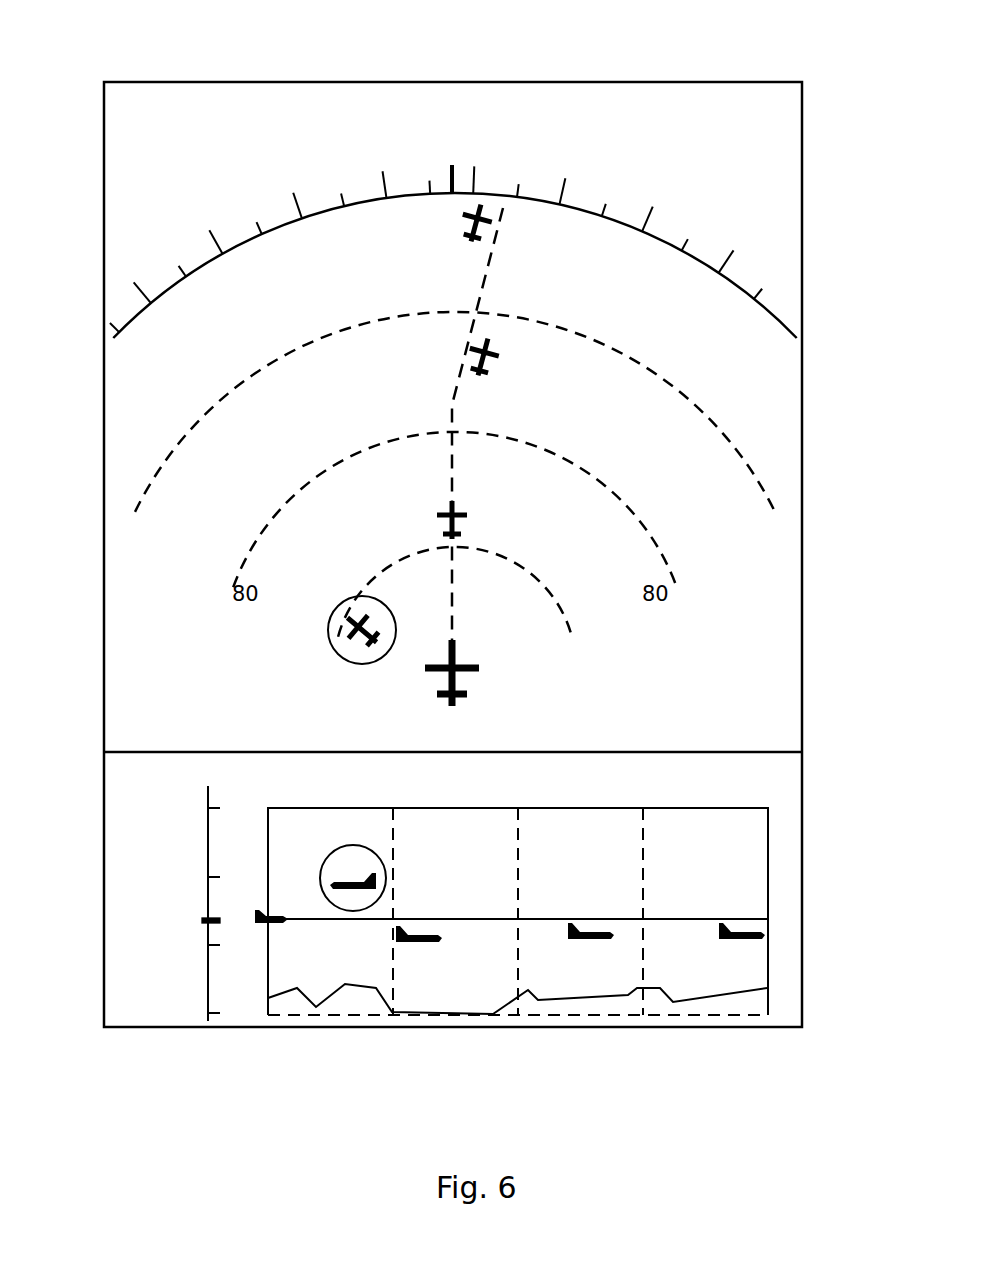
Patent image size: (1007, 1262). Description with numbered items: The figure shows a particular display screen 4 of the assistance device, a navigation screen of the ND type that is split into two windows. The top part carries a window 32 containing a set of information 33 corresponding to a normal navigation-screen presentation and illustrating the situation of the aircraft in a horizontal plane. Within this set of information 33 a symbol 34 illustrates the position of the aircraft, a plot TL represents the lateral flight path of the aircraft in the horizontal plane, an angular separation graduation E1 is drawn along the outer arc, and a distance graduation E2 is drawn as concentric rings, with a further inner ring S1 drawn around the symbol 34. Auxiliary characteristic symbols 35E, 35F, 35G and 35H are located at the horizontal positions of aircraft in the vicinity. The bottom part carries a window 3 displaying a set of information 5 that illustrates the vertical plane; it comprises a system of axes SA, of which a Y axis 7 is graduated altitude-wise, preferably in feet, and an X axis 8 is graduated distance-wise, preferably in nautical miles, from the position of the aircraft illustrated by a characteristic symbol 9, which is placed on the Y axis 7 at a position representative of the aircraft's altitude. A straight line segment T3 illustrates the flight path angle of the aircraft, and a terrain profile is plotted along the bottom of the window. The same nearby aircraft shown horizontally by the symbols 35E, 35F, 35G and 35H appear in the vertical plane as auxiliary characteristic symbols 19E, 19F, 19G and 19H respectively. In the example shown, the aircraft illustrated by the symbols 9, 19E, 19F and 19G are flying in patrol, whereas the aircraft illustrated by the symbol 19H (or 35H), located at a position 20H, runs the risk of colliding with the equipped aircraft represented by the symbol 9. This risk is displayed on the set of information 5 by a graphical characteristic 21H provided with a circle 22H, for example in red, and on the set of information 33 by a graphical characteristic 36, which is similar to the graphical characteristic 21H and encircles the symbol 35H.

The set of information 33 is at (700, 108).
The window 32 is at (158, 668).
The angular separation graduation E1 is at (660, 232).
The distance graduation E2 is at (275, 507).
The inner range ring S1 is at (457, 594).
The plot representing the lateral flight path TL is at (438, 407).
The auxiliary characteristic symbol 35G is at (463, 232).
The auxiliary characteristic symbol 35F is at (495, 362).
The auxiliary characteristic symbol 35E is at (462, 530).
The auxiliary characteristic symbol 35H is at (376, 616).
The graphical characteristic 36 is at (326, 653).
The symbol illustrating the position of the aircraft 34 is at (470, 681).
The window 3 is at (132, 789).
The system of axes SA is at (192, 1003).
The Y axis 7 is at (208, 903).
The set of information 5 is at (705, 777).
The X axis 8 is at (330, 808).
The screen 4 is at (291, 1030).
The straight line segment T3 is at (475, 917).
The characteristic symbol 9 is at (283, 926).
The position 20H is at (344, 863).
The auxiliary characteristic symbol 19H is at (358, 880).
The graphical characteristic 21H is at (308, 884).
The circle 22H is at (388, 881).
The auxiliary characteristic symbol 19E is at (420, 949).
The auxiliary characteristic symbol 19F is at (590, 946).
The auxiliary characteristic symbol 19G is at (735, 946).